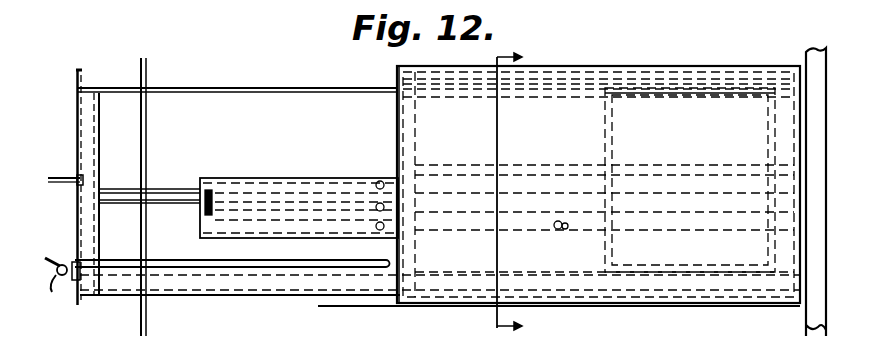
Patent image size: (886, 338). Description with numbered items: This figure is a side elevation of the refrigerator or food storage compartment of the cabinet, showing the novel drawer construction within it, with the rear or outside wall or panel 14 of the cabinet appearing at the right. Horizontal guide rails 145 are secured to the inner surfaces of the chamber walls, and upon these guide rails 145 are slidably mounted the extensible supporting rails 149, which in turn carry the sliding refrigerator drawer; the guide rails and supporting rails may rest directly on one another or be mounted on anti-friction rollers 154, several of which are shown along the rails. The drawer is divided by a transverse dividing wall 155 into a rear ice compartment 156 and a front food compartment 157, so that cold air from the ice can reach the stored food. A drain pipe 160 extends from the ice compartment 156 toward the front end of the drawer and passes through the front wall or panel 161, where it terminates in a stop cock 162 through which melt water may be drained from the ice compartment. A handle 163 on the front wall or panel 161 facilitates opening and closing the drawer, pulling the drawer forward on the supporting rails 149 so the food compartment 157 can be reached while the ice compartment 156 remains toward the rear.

The rear or outside wall or panel 14 is at (513, 185).
The horizontal guide rails 145 is at (686, 163).
The extensible supporting rails 149 is at (219, 186).
The anti-friction rollers 154 is at (372, 186).
The dividing wall 155 is at (405, 140).
The rear ice compartment 156 is at (594, 78).
The front food compartment 157 is at (237, 113).
The drain pipe 160 is at (200, 258).
The front wall or panel 161 is at (85, 157).
The stop cock 162 is at (64, 290).
The handle 163 is at (60, 167).